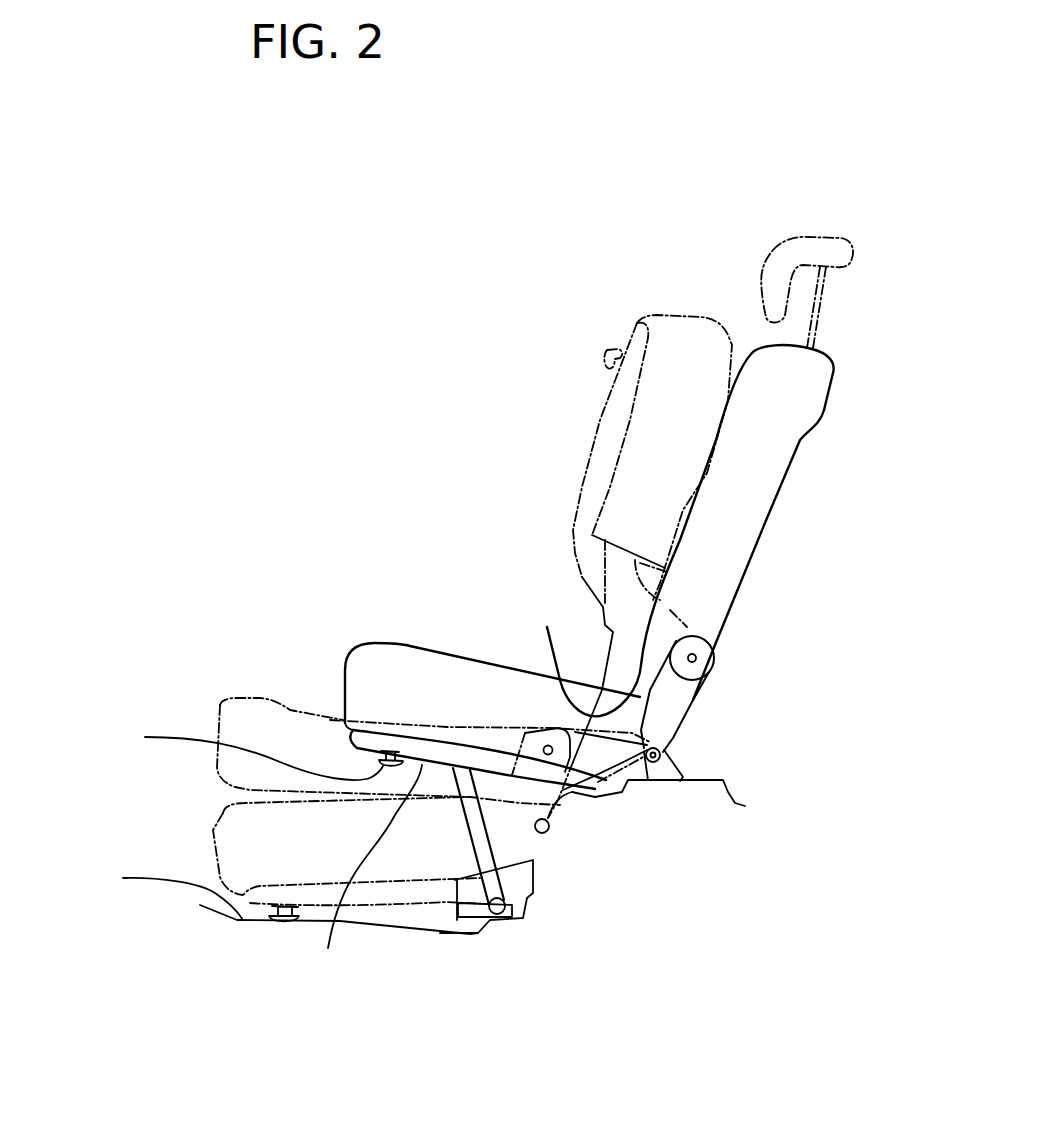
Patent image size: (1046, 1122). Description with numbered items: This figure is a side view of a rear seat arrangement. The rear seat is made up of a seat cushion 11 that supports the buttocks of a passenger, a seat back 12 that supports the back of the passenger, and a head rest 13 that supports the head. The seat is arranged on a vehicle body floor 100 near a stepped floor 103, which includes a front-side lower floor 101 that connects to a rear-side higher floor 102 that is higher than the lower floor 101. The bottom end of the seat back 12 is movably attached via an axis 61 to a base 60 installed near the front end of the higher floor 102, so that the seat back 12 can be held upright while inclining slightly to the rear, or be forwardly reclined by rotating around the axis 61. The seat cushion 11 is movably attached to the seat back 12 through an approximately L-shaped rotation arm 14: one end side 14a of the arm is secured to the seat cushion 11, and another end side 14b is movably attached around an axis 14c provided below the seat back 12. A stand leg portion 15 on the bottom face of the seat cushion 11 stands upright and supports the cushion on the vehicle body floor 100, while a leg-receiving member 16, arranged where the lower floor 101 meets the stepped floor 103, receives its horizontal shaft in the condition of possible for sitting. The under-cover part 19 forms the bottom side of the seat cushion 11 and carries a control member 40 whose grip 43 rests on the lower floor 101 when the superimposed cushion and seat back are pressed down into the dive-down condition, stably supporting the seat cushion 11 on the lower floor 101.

The seat cushion 11 is at (400, 643).
The seat back 12 is at (767, 519).
The head rest 13 is at (813, 237).
The rotation arm 14 is at (667, 708).
The one end side 14a is at (553, 663).
The another end side 14b is at (714, 662).
The axis 14c is at (695, 655).
The stand leg portion 15 is at (460, 912).
The leg-receiving member 16 is at (516, 920).
The under-cover part 19 is at (367, 872).
The control member 40 is at (241, 755).
The grip 43 is at (245, 750).
The base 60 is at (667, 772).
The axis 61 is at (657, 763).
The vehicle body floor 100 is at (375, 928).
The lower floor 101 is at (159, 889).
The higher floor 102 is at (712, 783).
The stepped floor 103 is at (541, 835).